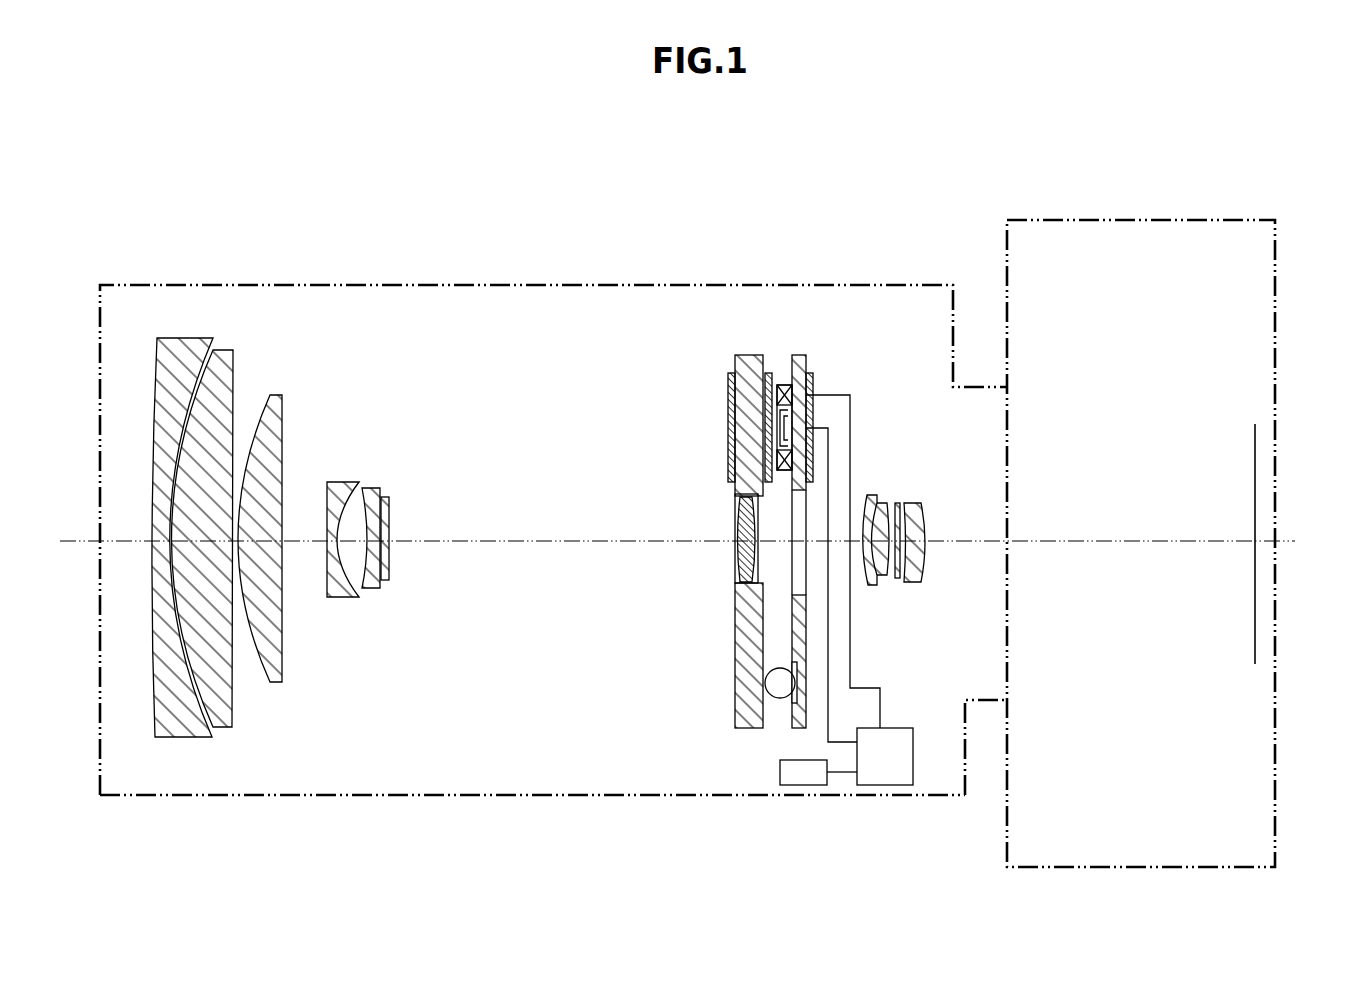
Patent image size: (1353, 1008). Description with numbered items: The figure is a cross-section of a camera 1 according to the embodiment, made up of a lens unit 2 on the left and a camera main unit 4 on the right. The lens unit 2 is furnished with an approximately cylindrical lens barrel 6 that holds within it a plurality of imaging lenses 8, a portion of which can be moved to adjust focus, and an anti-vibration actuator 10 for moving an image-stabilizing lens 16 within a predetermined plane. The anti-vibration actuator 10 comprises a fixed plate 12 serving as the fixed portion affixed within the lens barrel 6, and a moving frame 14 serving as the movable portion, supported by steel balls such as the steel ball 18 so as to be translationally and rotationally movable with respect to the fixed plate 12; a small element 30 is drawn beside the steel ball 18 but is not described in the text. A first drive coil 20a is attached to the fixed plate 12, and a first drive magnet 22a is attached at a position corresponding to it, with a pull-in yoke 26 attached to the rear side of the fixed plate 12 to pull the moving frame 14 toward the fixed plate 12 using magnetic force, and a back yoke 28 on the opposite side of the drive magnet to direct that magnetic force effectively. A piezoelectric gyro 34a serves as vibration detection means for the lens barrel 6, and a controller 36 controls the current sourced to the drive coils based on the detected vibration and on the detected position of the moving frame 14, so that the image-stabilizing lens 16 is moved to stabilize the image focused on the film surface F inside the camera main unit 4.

The camera 1 is at (664, 219).
The lens unit 2 is at (438, 282).
The camera main unit 4 is at (1141, 218).
The lens barrel 6 is at (446, 795).
The imaging lenses 8 is at (383, 503).
The anti-vibration actuator 10 is at (821, 336).
The fixed plate 12 is at (807, 361).
The moving frame 14 is at (735, 366).
The image-stabilizing lens 16 is at (738, 555).
The steel ball 18 is at (770, 688).
The first drive coil 20a is at (778, 458).
The first drive magnet 22a is at (768, 373).
The pull-in yoke 26 is at (813, 384).
The back yoke 28 is at (728, 428).
The ball receiving portion 30 is at (792, 667).
The gyro 34a is at (805, 785).
The controller 36 is at (882, 770).
The film surface F is at (1257, 643).